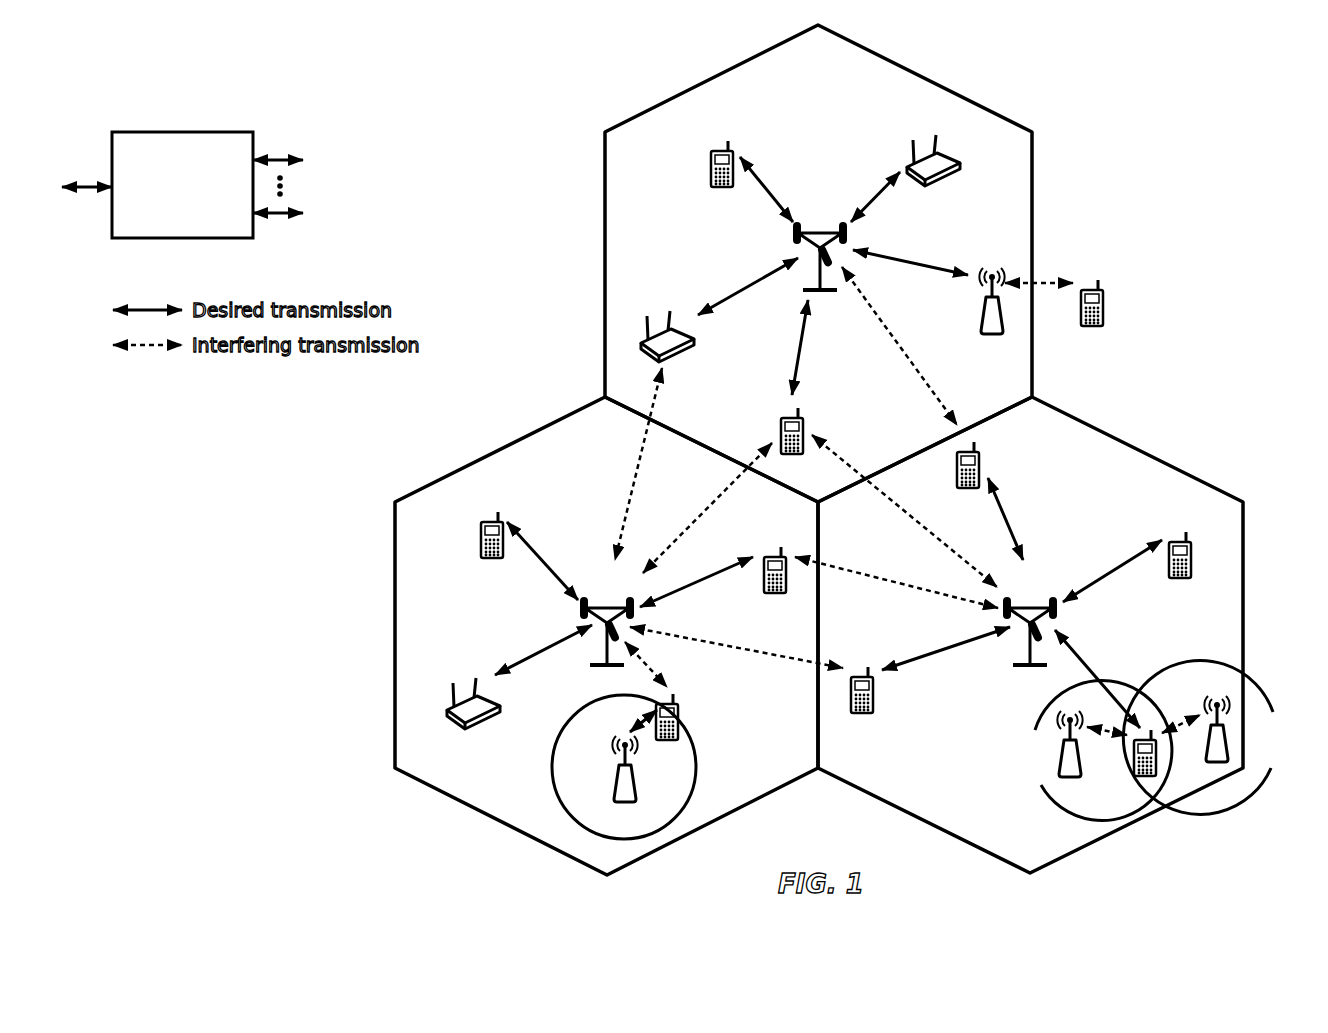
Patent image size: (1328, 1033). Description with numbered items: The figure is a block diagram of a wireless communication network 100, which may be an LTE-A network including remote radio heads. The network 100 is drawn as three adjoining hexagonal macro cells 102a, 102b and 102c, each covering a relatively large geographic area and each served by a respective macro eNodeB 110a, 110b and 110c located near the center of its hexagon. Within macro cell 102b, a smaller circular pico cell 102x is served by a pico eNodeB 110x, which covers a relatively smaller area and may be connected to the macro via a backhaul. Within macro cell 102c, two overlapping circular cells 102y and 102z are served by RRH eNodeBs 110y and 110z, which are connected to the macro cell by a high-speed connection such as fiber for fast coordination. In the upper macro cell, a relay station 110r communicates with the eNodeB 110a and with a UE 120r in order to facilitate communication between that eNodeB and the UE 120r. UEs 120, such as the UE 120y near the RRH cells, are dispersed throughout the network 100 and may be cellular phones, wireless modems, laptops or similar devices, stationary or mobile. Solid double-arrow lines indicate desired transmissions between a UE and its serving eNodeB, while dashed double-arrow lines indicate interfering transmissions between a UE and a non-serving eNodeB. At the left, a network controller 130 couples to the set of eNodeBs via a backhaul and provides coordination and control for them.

The wireless communication network 100 is at (1178, 93).
The macro cell 102a is at (940, 63).
The macro cell 102b is at (498, 449).
The macro cell 102c is at (1135, 449).
The pico cell 102x is at (571, 716).
The RRH cell 102y is at (1036, 713).
The RRH cell 102z is at (1195, 660).
The macro eNodeB 110a is at (826, 219).
The macro eNodeB 110b is at (604, 606).
The macro eNodeB 110c is at (1030, 606).
The relay station 110r is at (980, 323).
The pico eNodeB 110x is at (636, 794).
The RRH eNodeB 110y is at (1080, 768).
The RRH eNodeB 110z is at (1227, 752).
The UE 120 is at (711, 162).
The UE 120r is at (1103, 324).
The UE 120y is at (1133, 778).
The network controller 130 is at (178, 132).